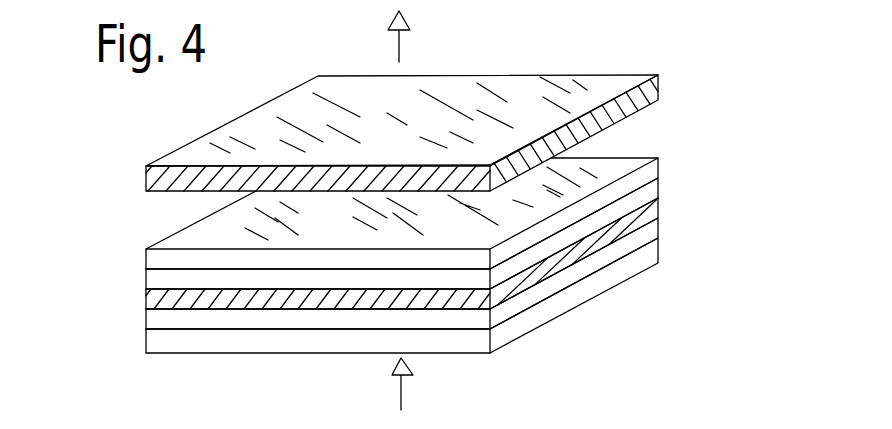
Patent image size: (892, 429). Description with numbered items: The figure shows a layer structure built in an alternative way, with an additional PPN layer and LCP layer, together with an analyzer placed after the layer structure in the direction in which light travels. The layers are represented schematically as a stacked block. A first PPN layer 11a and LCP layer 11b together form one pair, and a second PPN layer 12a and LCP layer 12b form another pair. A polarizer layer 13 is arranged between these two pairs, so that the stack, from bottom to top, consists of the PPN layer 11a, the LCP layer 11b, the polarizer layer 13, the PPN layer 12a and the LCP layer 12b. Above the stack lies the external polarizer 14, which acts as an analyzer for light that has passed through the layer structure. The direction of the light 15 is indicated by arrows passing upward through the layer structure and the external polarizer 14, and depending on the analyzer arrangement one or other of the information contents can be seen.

The external polarizer 14 is at (150, 180).
The direction of the light 15 is at (400, 52).
The polarizer layer 13 is at (150, 300).
The LCP layer 12b is at (653, 168).
The PPN layer 12a is at (653, 190).
The LCP layer 11b is at (653, 233).
The PPN layer 11a is at (653, 257).